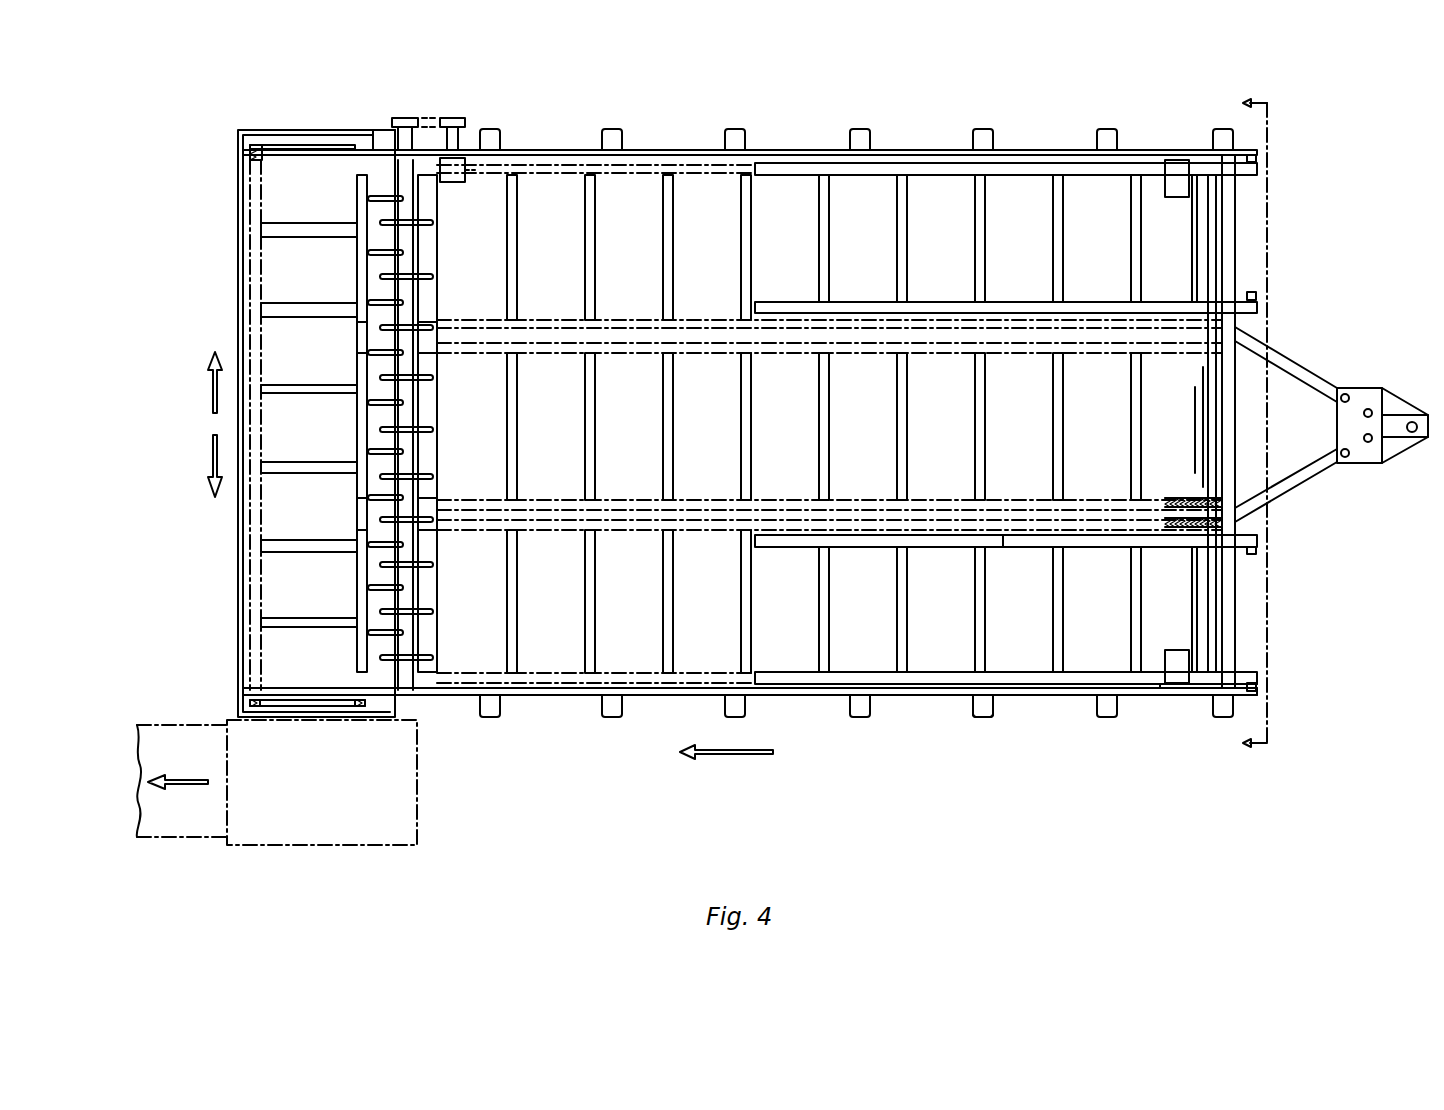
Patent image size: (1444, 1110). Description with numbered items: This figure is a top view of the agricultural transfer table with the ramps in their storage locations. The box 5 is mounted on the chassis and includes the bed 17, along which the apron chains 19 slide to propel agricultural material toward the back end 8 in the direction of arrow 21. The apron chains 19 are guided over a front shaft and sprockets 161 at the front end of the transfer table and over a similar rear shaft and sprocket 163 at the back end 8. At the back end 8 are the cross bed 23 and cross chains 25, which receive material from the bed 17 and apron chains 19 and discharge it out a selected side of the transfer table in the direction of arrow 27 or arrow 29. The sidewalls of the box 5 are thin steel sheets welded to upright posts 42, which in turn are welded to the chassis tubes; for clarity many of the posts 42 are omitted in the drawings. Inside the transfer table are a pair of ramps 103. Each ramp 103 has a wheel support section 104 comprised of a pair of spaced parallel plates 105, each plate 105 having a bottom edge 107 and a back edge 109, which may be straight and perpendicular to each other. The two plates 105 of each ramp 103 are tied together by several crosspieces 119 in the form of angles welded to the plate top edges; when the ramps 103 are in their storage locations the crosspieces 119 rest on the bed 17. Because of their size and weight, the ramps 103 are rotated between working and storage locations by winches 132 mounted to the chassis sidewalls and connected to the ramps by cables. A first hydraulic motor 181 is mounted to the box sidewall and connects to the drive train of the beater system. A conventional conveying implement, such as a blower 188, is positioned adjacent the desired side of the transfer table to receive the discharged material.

The box 5 is at (1256, 428).
The back end 8 is at (246, 185).
The bed 17 is at (645, 445).
The apron chains 19 is at (740, 605).
The arrow 21 is at (760, 754).
The cross bed 23 is at (292, 268).
The cross chains 25 is at (290, 512).
The arrow 27 is at (213, 395).
The arrow 29 is at (213, 445).
The upright posts 42 is at (978, 718).
The ramps 103 is at (1010, 699).
The wheel support section 104 is at (1047, 699).
The plates 105 is at (1003, 540).
The bottom edge 107 is at (887, 675).
The back edge 109 is at (1258, 680).
The crosspieces 119 is at (1022, 218).
The winches 132 is at (1177, 195).
The front shaft and sprockets 161 is at (1218, 437).
The rear shaft and sprocket 163 is at (363, 600).
The first hydraulic motor 181 is at (450, 180).
The blower 188 is at (418, 822).